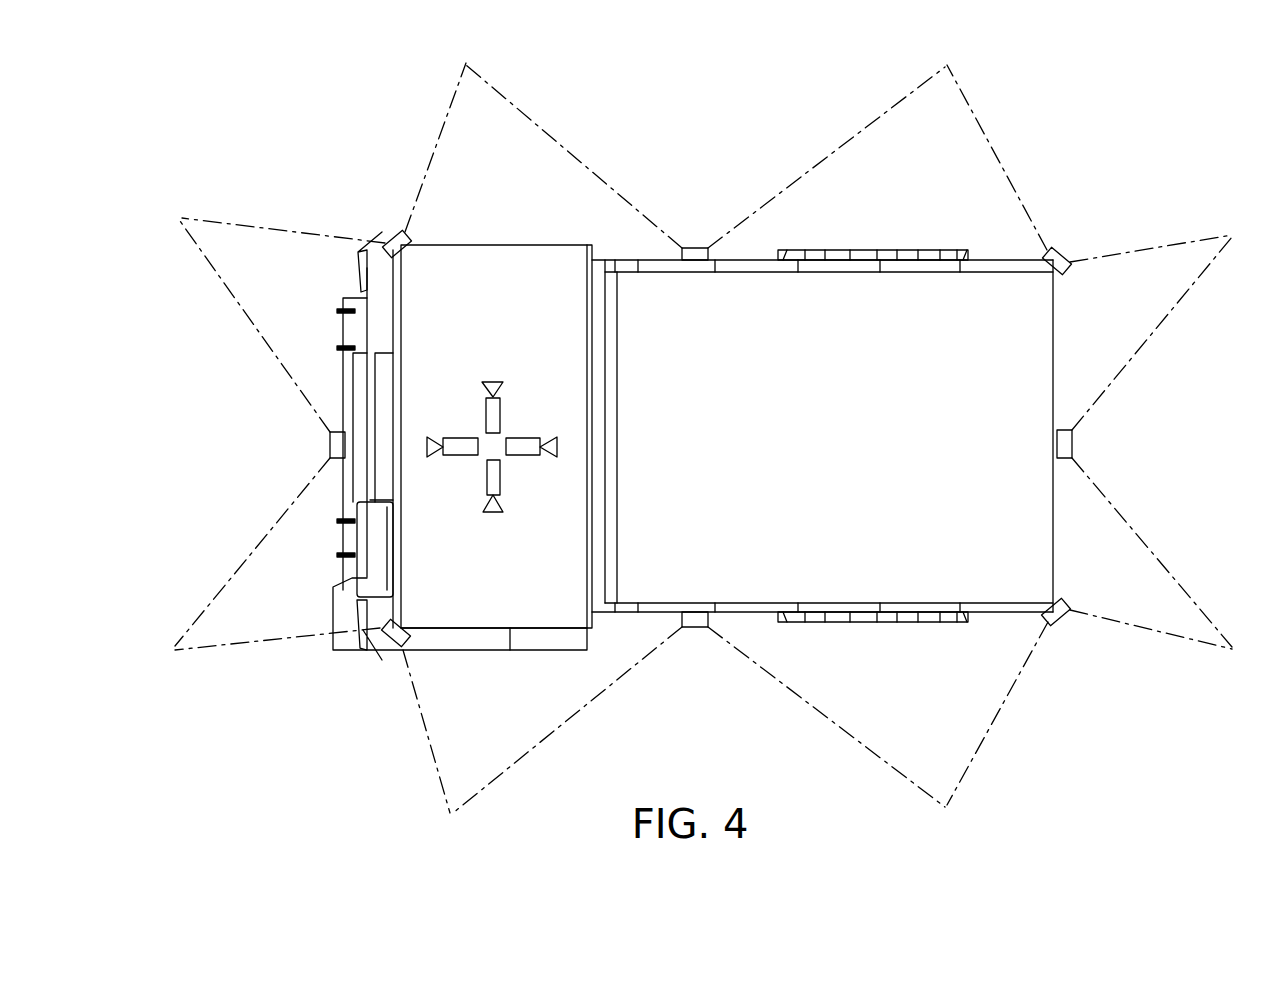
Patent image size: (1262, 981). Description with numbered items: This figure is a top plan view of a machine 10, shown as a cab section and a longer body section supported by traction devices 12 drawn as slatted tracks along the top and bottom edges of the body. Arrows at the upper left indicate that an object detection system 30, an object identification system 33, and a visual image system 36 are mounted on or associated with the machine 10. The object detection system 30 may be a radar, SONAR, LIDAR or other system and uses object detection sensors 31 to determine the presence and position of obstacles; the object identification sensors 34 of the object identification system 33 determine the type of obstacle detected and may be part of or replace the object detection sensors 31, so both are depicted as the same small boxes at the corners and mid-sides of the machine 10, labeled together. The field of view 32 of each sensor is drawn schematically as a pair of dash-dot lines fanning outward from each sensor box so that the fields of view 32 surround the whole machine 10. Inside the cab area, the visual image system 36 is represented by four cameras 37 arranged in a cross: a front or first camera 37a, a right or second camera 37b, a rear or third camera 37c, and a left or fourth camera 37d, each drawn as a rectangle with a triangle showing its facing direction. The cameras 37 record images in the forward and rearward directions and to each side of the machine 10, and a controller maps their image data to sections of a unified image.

The machine 10 is at (350, 108).
The traction devices 12 is at (865, 250).
The object detection system 30 is at (272, 170).
The object detection sensors 31 is at (704, 448).
The field of view 32 is at (420, 168).
The object identification system 33 is at (226, 178).
The object identification sensors 34 is at (415, 240).
The visual image system 36 is at (310, 168).
The cameras 37 is at (493, 393).
The first camera 37a is at (460, 455).
The second camera 37b is at (486, 398).
The third camera 37c is at (528, 438).
The fourth camera 37d is at (500, 478).